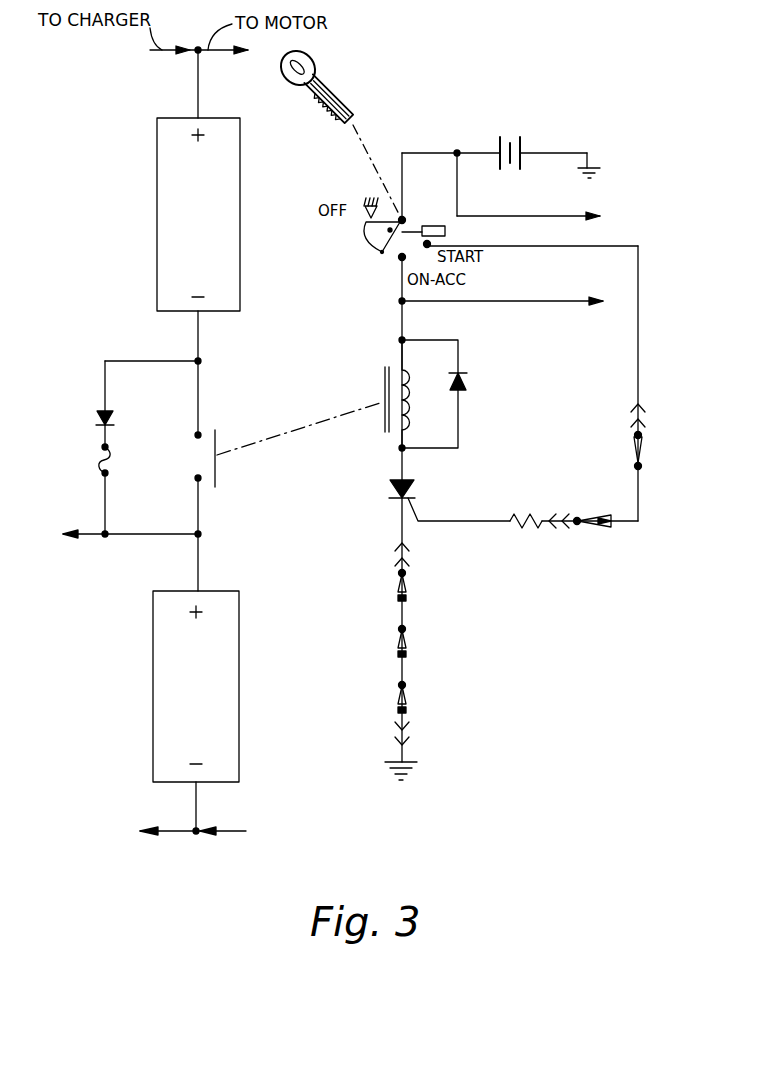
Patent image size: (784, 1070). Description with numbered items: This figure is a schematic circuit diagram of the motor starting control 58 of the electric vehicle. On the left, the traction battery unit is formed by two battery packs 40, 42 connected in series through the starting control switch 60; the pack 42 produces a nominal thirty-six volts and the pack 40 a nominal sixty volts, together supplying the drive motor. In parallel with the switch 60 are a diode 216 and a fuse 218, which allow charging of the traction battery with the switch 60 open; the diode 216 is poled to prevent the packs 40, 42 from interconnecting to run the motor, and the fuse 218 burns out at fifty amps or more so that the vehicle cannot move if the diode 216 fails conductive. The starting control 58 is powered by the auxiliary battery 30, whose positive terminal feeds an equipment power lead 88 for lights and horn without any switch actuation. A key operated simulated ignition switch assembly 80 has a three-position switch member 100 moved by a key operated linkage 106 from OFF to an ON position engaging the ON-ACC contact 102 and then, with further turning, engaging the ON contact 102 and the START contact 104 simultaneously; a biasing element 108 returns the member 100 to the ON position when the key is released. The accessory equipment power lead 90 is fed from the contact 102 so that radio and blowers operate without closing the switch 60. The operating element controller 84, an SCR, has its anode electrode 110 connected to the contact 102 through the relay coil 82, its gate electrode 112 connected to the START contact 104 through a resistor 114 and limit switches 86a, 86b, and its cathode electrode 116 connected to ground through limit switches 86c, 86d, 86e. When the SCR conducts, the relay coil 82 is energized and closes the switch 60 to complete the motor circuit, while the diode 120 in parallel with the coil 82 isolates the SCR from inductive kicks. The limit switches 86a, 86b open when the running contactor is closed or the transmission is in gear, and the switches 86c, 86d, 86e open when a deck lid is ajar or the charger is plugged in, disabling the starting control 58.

The auxiliary battery 30 is at (500, 140).
The battery pack 40 is at (196, 686).
The battery pack 42 is at (198, 214).
The motor starting control 58 is at (636, 162).
The starting control switch 60 is at (216, 472).
The ignition switch assembly 80 is at (362, 237).
The starting control switch operating element 82 is at (376, 386).
The operating element controller 84 is at (380, 491).
The limit switch 86a is at (590, 524).
The limit switch 86b is at (643, 456).
The limit switch 86c is at (405, 582).
The limit switch 86d is at (405, 638).
The limit switch 86e is at (405, 694).
The equipment power lead 88 is at (537, 216).
The accessory equipment power lead 90 is at (528, 303).
The switch member 100 is at (384, 253).
The ON-ACC contact 102 is at (400, 260).
The START contact 104 is at (445, 242).
The key operated linkage 106 is at (360, 142).
The biasing element 108 is at (430, 226).
The anode electrode 110 is at (388, 478).
The gate electrode 112 is at (416, 506).
The resistor 114 is at (517, 518).
The cathode electrode 116 is at (392, 503).
The diode 120 is at (468, 383).
The diode 216 is at (92, 412).
The fuse 218 is at (100, 460).